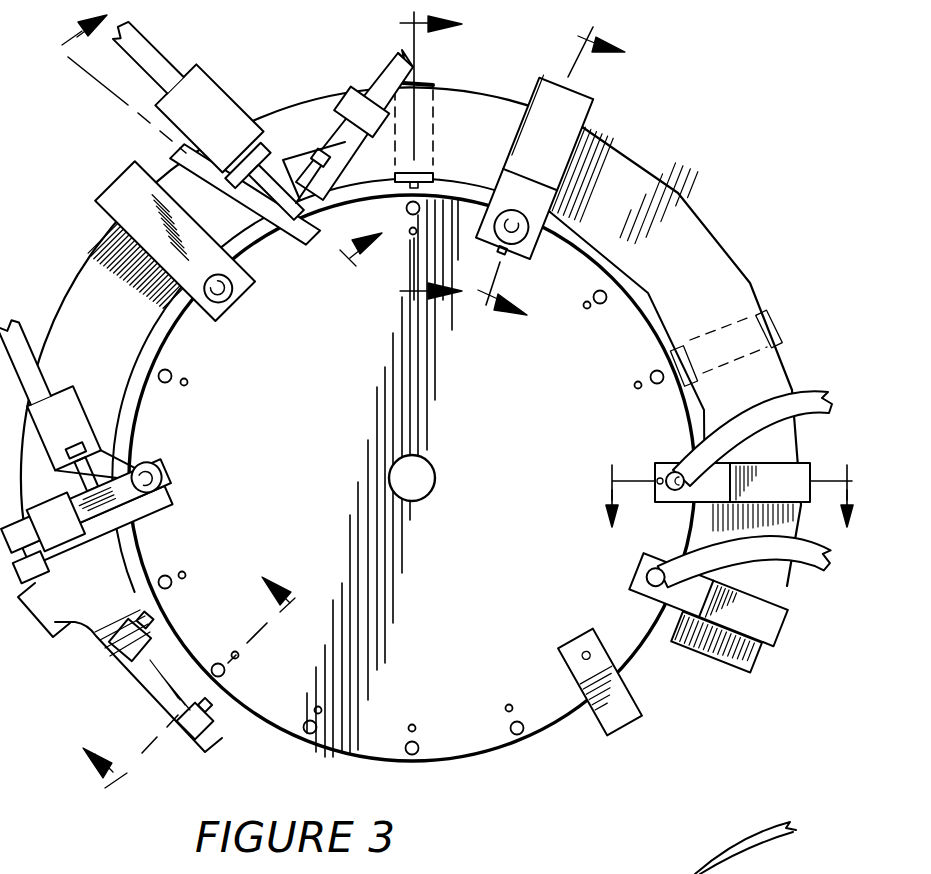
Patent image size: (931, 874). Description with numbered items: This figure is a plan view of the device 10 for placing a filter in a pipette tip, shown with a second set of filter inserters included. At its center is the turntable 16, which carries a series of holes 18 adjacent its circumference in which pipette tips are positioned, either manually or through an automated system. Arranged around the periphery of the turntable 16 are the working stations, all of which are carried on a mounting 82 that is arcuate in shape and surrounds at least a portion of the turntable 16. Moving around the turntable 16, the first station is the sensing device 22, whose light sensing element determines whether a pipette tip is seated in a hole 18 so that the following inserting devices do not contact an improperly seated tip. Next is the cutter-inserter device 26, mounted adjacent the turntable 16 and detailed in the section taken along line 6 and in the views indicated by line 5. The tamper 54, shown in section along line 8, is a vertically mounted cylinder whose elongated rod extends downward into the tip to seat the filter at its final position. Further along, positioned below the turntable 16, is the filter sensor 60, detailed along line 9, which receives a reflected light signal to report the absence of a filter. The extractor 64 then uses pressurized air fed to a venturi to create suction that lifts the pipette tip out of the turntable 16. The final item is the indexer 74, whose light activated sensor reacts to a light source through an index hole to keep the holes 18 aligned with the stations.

The device 10 is at (693, 137).
The turntable 16 is at (487, 548).
The holes 18 is at (412, 755).
The sensing device 22 is at (210, 735).
The cutter-inserter device 26 is at (130, 513).
The tamper 54 is at (128, 192).
The filter sensor 60 is at (423, 123).
The extractor 64 is at (788, 482).
The indexer 74 is at (618, 715).
The mounting 82 is at (722, 282).
The section line 5- 5 is at (176, 670).
The section line 6- 6 is at (212, 161).
The section line 8- 8 is at (562, 183).
The section line 9- 9 is at (417, 157).